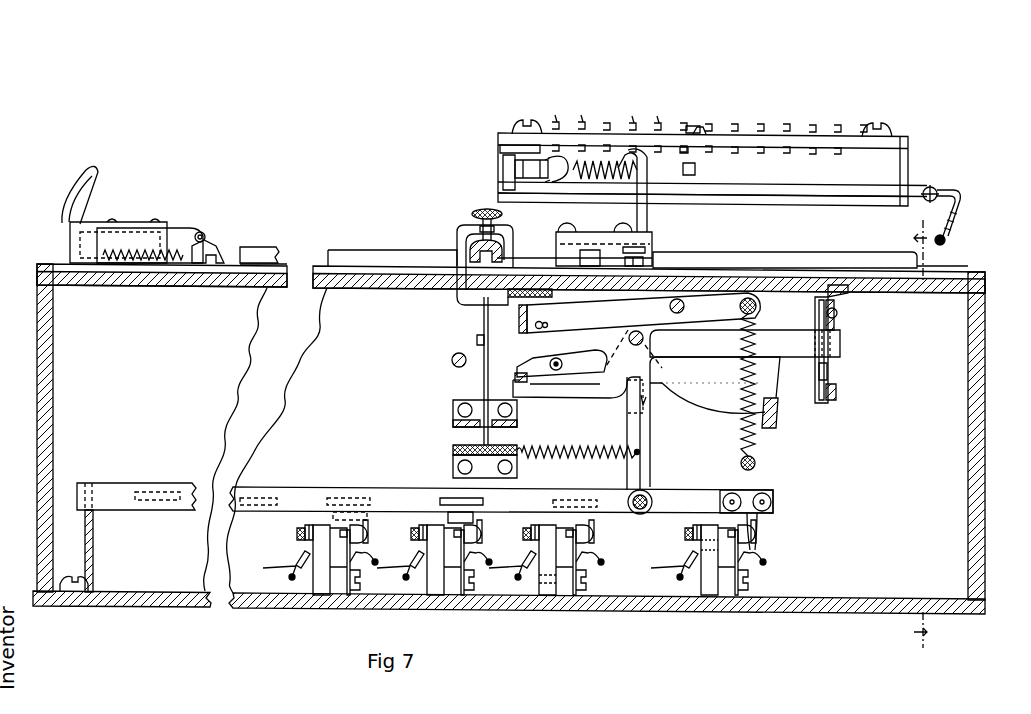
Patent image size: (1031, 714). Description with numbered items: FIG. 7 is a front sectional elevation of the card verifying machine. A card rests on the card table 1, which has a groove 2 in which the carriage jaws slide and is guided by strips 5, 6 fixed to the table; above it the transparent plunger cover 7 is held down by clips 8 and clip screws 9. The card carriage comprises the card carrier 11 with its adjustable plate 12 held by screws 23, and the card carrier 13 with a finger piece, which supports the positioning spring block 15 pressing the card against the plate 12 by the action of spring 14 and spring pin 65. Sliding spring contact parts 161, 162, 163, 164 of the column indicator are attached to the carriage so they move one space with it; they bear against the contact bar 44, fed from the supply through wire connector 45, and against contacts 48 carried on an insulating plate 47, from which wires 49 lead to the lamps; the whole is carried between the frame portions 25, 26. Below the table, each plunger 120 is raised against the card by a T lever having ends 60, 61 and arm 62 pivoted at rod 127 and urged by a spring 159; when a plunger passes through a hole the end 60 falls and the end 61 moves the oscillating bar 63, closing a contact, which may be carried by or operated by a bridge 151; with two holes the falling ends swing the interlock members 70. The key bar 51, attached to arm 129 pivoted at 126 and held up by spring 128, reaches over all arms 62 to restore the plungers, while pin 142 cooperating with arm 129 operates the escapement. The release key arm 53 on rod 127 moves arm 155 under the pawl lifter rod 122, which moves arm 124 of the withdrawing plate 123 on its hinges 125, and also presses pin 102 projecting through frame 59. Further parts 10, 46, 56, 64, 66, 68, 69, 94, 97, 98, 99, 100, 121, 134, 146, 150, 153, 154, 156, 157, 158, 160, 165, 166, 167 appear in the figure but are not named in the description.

The card table 1 is at (380, 258).
The groove 2 is at (402, 276).
The guide strip 5 is at (782, 262).
The guide strip 6 is at (285, 264).
The transparent plunger cover 7 is at (470, 244).
The clip 8 is at (470, 232).
The clip screw 9 is at (478, 212).
The cam 10 is at (522, 124).
The card carrier 11 is at (655, 242).
The adjustable plate 12 is at (648, 262).
The card carrier 13 is at (100, 172).
The spring 14 is at (162, 250).
The positioning spring block 15 is at (258, 248).
The screw 23 is at (648, 252).
The frame 25 is at (46, 362).
The frame 26 is at (968, 362).
The contact bar 44 is at (914, 190).
The wire connector 45 is at (958, 200).
The casing 46 is at (898, 170).
The insulating plate 47 is at (902, 140).
The contacts 48 is at (607, 124).
The wires 49 is at (660, 121).
The bar 51 is at (530, 313).
The arm 53 is at (776, 418).
The bottom wall 56 is at (845, 600).
The frame 59 is at (262, 440).
The T lever end 60 is at (745, 343).
The lever arm 61 is at (641, 491).
The T lever arm 62 is at (477, 340).
The oscillating bar 63 is at (290, 489).
The lever 64 is at (648, 506).
The spring pin 65 is at (206, 244).
The post 66 is at (821, 404).
The pad 68 is at (836, 392).
The block 69 is at (829, 369).
The interlock members 70 is at (838, 313).
The switch block 94 is at (525, 560).
The contact 97 is at (372, 531).
The spring contact 98 is at (366, 552).
The contact spring 99 is at (586, 566).
The bracket 100 is at (360, 584).
The pin 102 is at (630, 408).
The plunger 120 is at (484, 322).
The bolt 121 is at (452, 360).
The pawl lifter rod 122 is at (514, 392).
The withdrawing plate 123 is at (652, 366).
The arm 124 is at (516, 377).
The hinges 125 is at (553, 370).
The pivot 126 is at (669, 306).
The rod 127 is at (644, 339).
The spring 128 is at (755, 380).
The arm 129 is at (729, 307).
The ball 134 is at (756, 464).
The pin 142 is at (548, 325).
The bracket 146 is at (95, 540).
The rollers 150 is at (748, 492).
The bridge 151 is at (453, 500).
The pad 153 is at (508, 294).
The screw 154 is at (297, 535).
The arm 155 is at (565, 391).
The nut 156 is at (303, 529).
The block 157 is at (455, 416).
The block 158 is at (453, 462).
The spring 159 is at (470, 446).
The lever 160 is at (647, 218).
The sliding spring contact part 161 is at (523, 148).
The sliding spring contact part 162 is at (520, 168).
The sliding spring contact part 163 is at (578, 174).
The sliding spring contact part 164 is at (696, 168).
The rod 165 is at (700, 184).
The lug 166 is at (662, 122).
The lug 167 is at (688, 150).